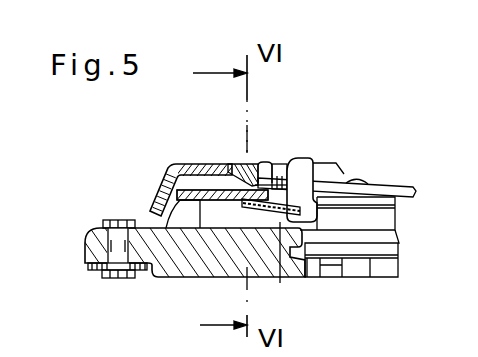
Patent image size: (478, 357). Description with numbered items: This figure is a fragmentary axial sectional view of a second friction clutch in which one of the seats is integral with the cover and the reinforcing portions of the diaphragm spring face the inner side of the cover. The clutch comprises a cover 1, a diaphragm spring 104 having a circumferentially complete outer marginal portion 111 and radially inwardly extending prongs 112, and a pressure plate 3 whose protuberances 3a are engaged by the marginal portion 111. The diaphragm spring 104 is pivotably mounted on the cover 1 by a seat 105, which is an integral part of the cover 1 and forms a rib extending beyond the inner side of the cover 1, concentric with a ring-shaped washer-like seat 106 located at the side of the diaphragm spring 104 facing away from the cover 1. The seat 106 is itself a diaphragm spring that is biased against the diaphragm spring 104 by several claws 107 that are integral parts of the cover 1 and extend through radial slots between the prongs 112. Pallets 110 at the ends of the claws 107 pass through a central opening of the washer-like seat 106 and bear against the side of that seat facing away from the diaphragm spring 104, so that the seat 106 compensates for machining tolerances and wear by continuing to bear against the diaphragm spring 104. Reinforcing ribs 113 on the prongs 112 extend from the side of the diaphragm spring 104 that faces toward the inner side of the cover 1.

The cover 1 is at (160, 193).
The pressure plate 3 is at (170, 260).
The protuberances 3a is at (182, 219).
The diaphragm spring 104 is at (190, 194).
The outer marginal portion 111 is at (190, 194).
The seat 105 is at (249, 182).
The washer-like seat 106 is at (276, 268).
The claws 107 is at (299, 177).
The pallets 110 is at (298, 178).
The prongs 112 is at (402, 187).
The reinforcing ribs 113 is at (354, 182).